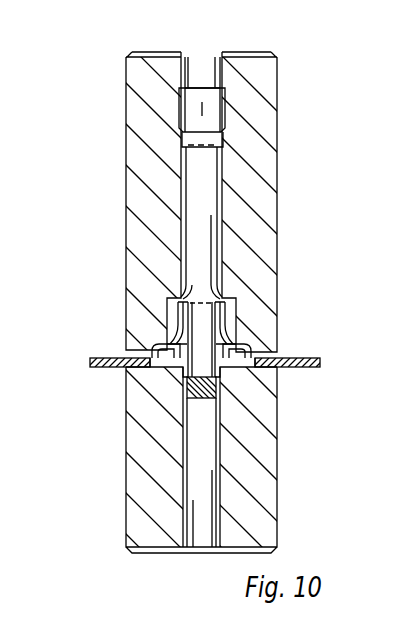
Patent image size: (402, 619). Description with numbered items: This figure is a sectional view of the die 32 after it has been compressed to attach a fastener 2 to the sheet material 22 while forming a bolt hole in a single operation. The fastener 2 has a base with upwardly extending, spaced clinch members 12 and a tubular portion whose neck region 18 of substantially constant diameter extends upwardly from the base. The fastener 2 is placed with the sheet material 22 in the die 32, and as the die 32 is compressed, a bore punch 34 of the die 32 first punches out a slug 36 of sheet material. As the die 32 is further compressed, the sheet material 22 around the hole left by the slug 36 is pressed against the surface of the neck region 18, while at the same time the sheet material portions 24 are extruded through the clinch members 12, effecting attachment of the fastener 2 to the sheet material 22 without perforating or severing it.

The fastener 2 is at (235, 322).
The clinch members 12 is at (148, 343).
The neck region 18 is at (246, 338).
The sheet material 22 is at (87, 362).
The portions of the sheet material 24 is at (142, 373).
The die 32 is at (122, 272).
The bore punch 34 is at (178, 376).
The slug 36 is at (225, 388).